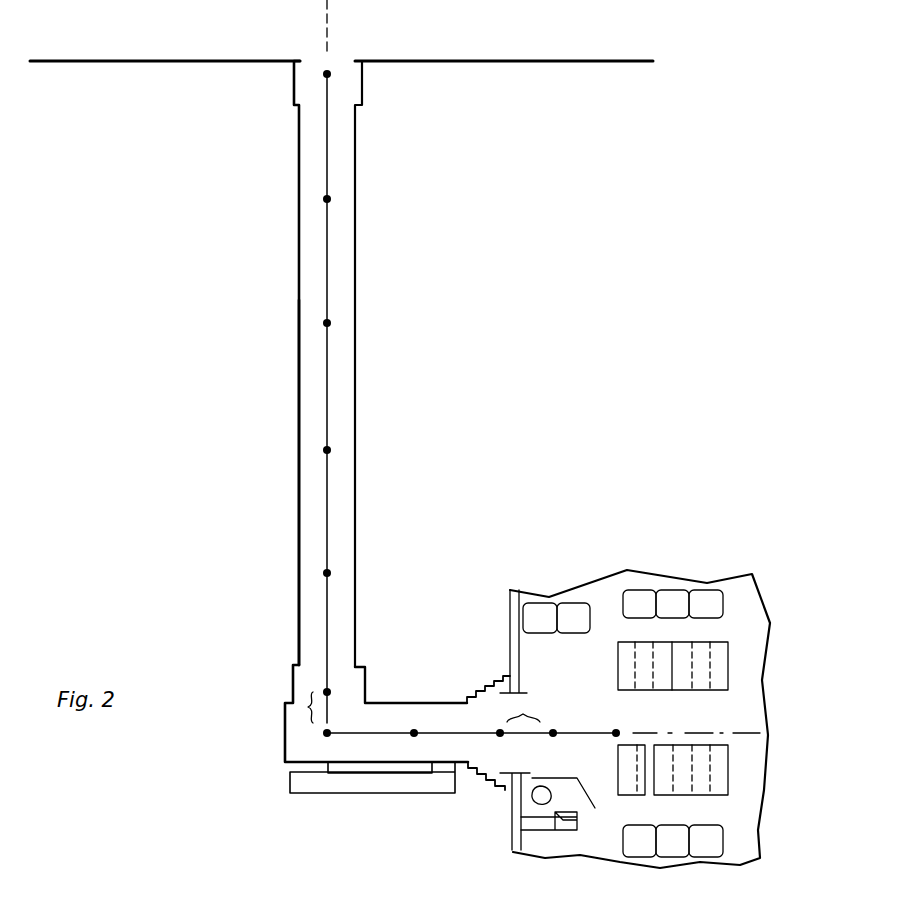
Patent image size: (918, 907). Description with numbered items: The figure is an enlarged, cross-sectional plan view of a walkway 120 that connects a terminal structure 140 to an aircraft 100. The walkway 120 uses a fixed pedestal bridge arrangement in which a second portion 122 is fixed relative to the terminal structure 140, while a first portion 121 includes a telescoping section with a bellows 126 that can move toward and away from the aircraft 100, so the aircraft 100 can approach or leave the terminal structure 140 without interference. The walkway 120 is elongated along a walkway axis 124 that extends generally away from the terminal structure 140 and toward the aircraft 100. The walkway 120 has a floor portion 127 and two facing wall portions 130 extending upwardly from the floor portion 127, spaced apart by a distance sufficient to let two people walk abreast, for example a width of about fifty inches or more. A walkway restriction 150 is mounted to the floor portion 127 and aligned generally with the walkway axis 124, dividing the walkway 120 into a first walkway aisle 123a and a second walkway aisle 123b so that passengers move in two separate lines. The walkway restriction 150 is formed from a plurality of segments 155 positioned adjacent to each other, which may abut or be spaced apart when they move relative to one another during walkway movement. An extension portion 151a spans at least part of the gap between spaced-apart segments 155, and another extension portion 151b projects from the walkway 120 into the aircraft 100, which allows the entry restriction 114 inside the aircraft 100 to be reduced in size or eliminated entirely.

The aircraft 100 is at (660, 693).
The entry restriction 114 is at (597, 735).
The walkway 120 is at (469, 425).
The first portion 121 is at (429, 692).
The second portion 122 is at (376, 100).
The first walkway aisle 123a is at (310, 226).
The second walkway aisle 123b is at (343, 273).
The walkway axis 124 is at (330, 41).
The bellows 126 is at (490, 682).
The floor portion 127 is at (306, 150).
The wall portions 130 is at (351, 364).
The terminal structure 140 is at (555, 62).
The walkway restriction 150 is at (334, 182).
The extension portion 151a is at (306, 707).
The extension portion 151b is at (525, 713).
The segments 155 is at (327, 605).